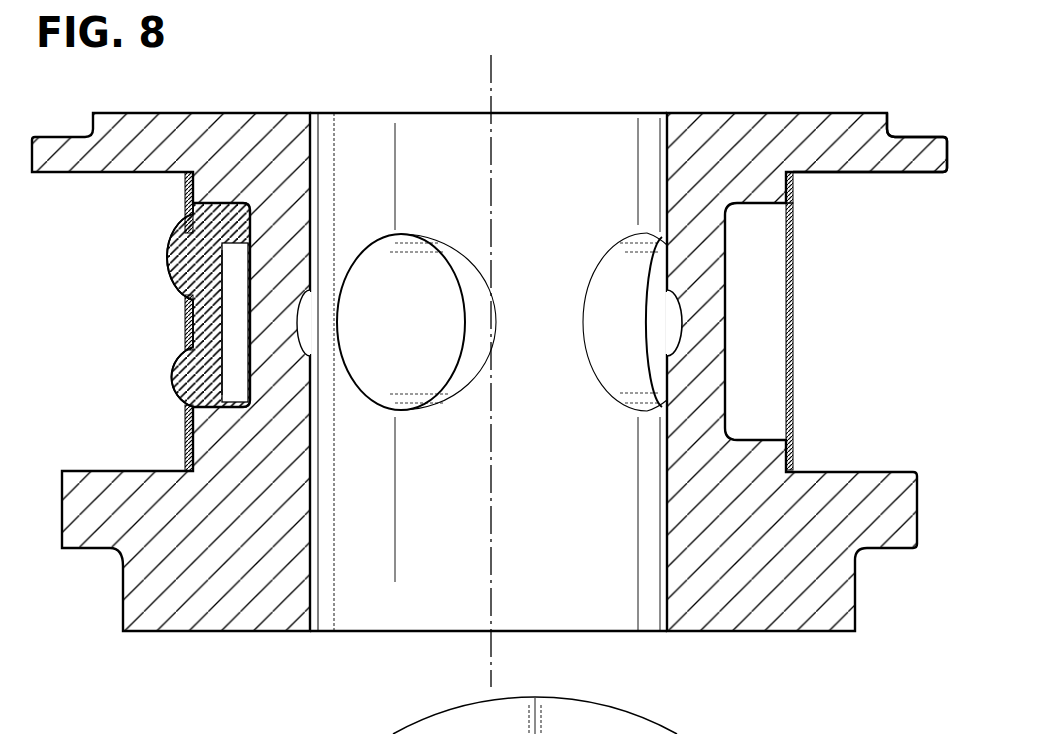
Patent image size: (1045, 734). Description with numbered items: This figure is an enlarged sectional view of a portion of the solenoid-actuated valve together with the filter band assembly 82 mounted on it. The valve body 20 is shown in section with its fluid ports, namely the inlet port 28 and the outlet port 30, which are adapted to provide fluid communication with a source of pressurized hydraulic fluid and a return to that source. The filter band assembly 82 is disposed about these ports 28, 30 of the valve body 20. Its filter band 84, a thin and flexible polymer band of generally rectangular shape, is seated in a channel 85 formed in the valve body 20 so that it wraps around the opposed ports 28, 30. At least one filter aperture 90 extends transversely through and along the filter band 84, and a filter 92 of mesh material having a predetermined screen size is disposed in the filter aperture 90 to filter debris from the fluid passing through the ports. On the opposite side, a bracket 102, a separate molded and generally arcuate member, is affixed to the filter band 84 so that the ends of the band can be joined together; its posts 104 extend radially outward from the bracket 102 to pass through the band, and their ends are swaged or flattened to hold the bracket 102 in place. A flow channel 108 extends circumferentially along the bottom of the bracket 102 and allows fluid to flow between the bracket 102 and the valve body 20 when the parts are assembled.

The valve body 20 is at (837, 606).
The inlet port 28 is at (412, 238).
The outlet port 30 is at (616, 250).
The filter band assembly 82 is at (793, 440).
The filter band 84 is at (185, 452).
The channel 85 is at (858, 176).
The filter aperture 90 is at (793, 215).
The filter 92 is at (793, 333).
The bracket 102 is at (212, 205).
The post 104 is at (172, 370).
The flow channel 108 is at (223, 270).